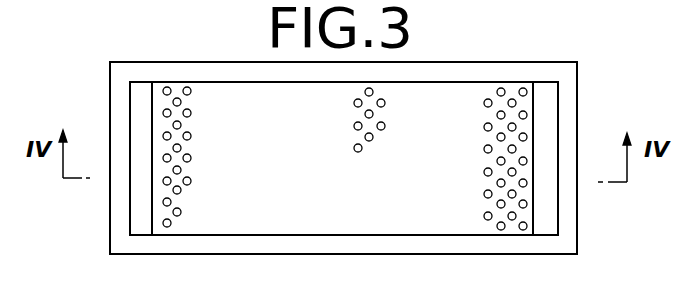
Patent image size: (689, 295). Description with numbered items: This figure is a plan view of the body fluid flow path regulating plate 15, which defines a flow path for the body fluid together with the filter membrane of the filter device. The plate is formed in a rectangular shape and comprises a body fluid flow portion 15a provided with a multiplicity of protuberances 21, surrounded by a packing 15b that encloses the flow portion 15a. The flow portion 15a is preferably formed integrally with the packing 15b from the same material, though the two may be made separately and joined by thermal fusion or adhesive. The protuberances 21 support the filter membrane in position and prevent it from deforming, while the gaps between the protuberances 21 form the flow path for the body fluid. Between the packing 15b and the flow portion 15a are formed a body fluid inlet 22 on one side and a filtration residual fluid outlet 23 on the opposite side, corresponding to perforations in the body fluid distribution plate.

The body fluid flow path regulating plate 15 is at (536, 52).
The body fluid flow portion 15a is at (460, 213).
The packing 15b is at (115, 106).
The protuberances 21 is at (191, 134).
The body fluid inlet 22 is at (145, 220).
The filtration residual fluid outlet 23 is at (548, 135).